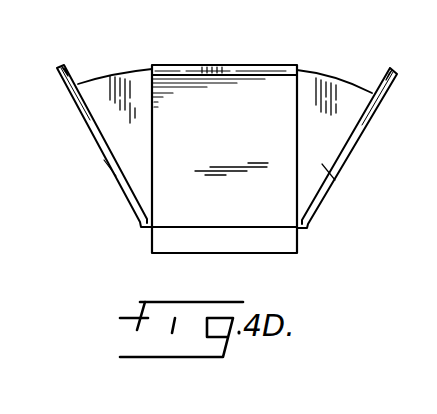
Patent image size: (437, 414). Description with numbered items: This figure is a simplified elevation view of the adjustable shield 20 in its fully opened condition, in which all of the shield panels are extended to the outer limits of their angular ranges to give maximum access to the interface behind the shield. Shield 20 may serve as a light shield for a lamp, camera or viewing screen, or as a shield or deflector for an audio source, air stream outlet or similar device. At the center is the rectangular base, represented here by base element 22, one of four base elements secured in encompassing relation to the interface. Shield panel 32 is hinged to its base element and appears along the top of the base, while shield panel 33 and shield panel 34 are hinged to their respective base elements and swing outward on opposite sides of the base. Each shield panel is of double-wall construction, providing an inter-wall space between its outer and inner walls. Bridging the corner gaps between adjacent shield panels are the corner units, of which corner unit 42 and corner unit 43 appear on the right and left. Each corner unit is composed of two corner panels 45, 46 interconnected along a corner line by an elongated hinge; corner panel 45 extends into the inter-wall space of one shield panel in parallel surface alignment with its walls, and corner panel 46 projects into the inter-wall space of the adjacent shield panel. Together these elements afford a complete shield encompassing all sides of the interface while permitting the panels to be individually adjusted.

The adjustable shield 20 is at (278, 58).
The base element 22 is at (214, 251).
The shield panel 32 is at (240, 65).
The shield panel 33 is at (358, 140).
The shield panel 34 is at (85, 124).
The corner unit 42 is at (348, 80).
The corner unit 43 is at (120, 72).
The corner panel 45 is at (131, 163).
The corner panel 46 is at (326, 157).